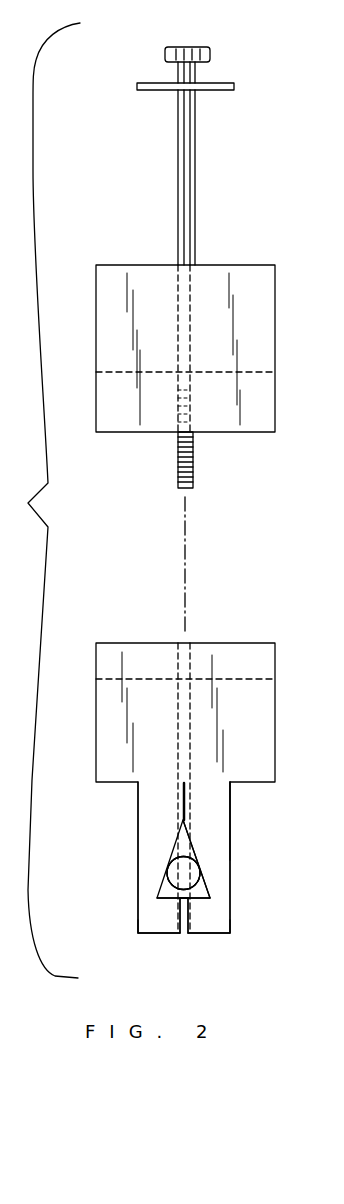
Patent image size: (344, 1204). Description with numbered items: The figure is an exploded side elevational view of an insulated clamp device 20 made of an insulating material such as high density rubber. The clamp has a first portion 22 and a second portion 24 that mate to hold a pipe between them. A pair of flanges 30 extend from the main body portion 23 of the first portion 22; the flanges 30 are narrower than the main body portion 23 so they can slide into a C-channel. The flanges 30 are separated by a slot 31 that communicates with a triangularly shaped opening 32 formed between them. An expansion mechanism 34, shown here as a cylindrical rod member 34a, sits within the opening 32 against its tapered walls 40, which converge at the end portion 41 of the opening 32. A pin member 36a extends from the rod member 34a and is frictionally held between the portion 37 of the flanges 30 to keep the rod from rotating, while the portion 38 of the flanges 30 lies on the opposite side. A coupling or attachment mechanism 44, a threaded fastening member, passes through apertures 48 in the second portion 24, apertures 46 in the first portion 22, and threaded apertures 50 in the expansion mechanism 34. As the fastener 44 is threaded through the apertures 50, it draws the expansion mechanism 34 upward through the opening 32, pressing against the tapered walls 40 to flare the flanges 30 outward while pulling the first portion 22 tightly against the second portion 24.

The insulated clamp device 20 is at (233, 57).
The first portion 22 is at (253, 716).
The main body portion 23 is at (108, 711).
The second portion 24 is at (223, 334).
The flanges 30 is at (145, 865).
The slot 31 is at (192, 921).
The triangularly shaped opening 32 is at (200, 893).
The expansion mechanism 34 is at (173, 894).
The cylindrical rod member 34a is at (180, 872).
The pin member 36a is at (190, 847).
The portion of the flanges 37 is at (220, 801).
The portion of the flanges 38 is at (223, 918).
The tapered walls 40 is at (173, 857).
The end portion 41 is at (182, 821).
The coupling or attachment mechanism 44 is at (190, 188).
The apertures 46 is at (193, 660).
The apertures 48 is at (180, 300).
The apertures 50 is at (177, 880).